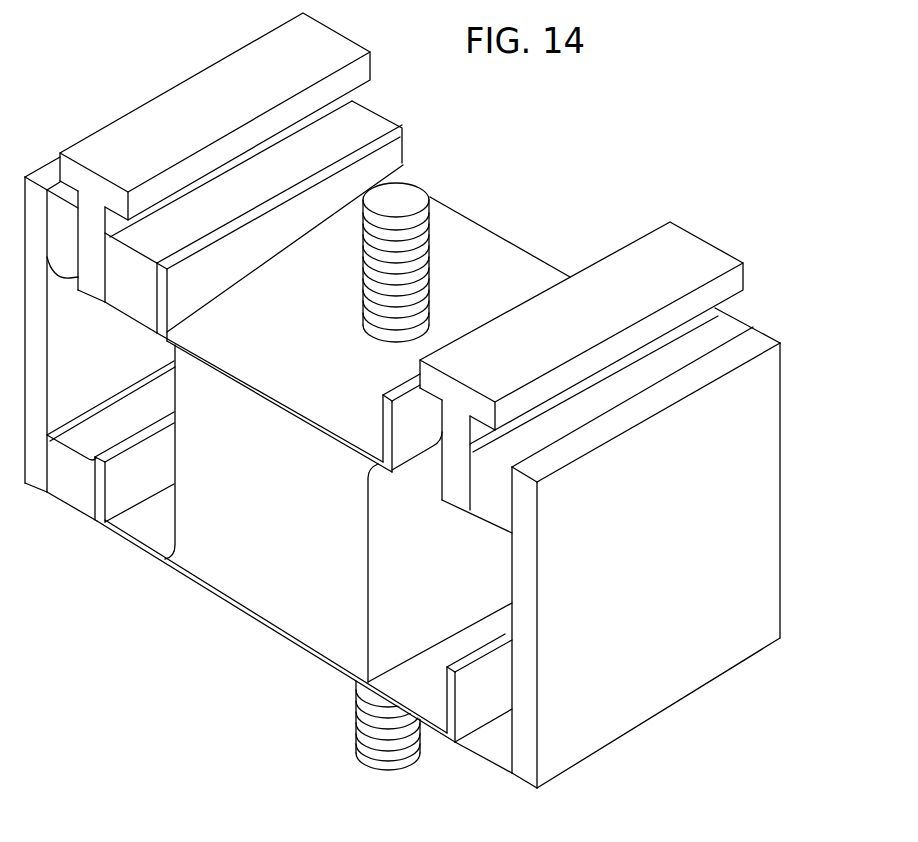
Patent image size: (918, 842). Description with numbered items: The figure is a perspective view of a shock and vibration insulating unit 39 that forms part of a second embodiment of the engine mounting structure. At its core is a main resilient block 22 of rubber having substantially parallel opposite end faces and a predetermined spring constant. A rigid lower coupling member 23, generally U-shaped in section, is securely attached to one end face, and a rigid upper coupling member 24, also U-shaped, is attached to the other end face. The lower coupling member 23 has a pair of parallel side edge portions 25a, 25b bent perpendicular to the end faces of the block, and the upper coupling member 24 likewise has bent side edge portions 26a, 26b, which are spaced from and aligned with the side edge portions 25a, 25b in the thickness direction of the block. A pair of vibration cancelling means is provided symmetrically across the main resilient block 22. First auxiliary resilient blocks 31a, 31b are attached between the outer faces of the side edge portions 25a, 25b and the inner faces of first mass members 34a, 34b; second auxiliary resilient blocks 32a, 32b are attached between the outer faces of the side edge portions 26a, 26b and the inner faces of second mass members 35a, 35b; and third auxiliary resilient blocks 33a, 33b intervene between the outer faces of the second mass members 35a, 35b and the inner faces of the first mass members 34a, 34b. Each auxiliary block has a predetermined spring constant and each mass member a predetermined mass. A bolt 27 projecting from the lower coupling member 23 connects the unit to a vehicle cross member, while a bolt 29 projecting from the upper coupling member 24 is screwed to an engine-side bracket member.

The main resilient block 22 is at (283, 522).
The lower coupling member 23 is at (248, 620).
The upper coupling member 24 is at (512, 244).
The side edge portion 25a is at (462, 743).
The side edge portion 25b is at (95, 508).
The side edge portion 26a is at (392, 462).
The side edge portion 26b is at (153, 294).
The bolt 27 is at (357, 713).
The bolt 29 is at (431, 261).
The first auxiliary resilient block 31a is at (488, 747).
The first auxiliary resilient block 31b is at (70, 502).
The second auxiliary resilient block 32a is at (427, 478).
The second auxiliary resilient block 32b is at (100, 300).
The third auxiliary resilient block 33a is at (492, 523).
The third auxiliary resilient block 33b is at (64, 268).
The first mass member 34a is at (668, 702).
The first mass member 34b is at (47, 160).
The second mass member 35a is at (653, 232).
The second mass member 35b is at (220, 62).
The shock and vibration insulating unit 39 is at (512, 162).